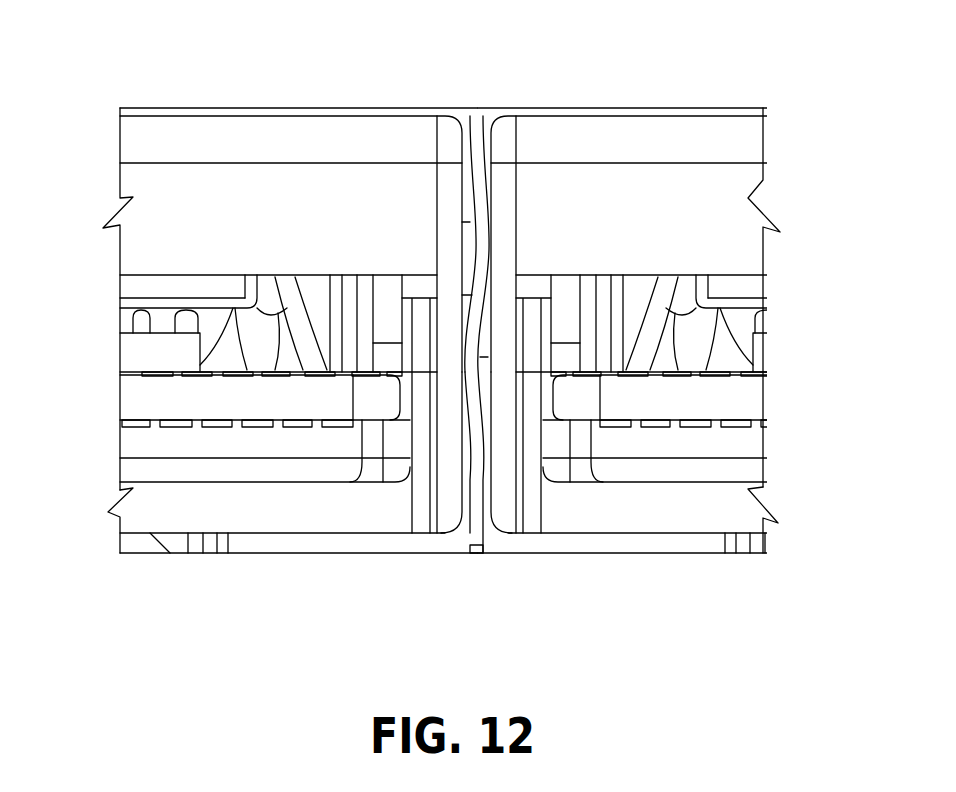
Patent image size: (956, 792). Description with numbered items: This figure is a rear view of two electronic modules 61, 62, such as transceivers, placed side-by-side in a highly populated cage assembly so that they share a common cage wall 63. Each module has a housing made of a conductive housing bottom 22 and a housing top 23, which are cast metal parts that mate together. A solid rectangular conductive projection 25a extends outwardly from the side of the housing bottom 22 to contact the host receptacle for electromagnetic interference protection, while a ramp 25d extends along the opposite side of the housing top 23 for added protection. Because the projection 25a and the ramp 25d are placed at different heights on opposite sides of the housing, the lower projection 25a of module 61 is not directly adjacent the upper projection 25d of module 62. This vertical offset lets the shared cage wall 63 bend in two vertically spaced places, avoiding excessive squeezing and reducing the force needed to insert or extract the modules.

The housing bottom 22 is at (155, 238).
The housing top 23 is at (167, 505).
The projection 25a is at (487, 412).
The ramp 25d is at (467, 250).
The electronic module 61 is at (243, 135).
The electronic module 62 is at (663, 110).
The cage wall 63 is at (475, 520).